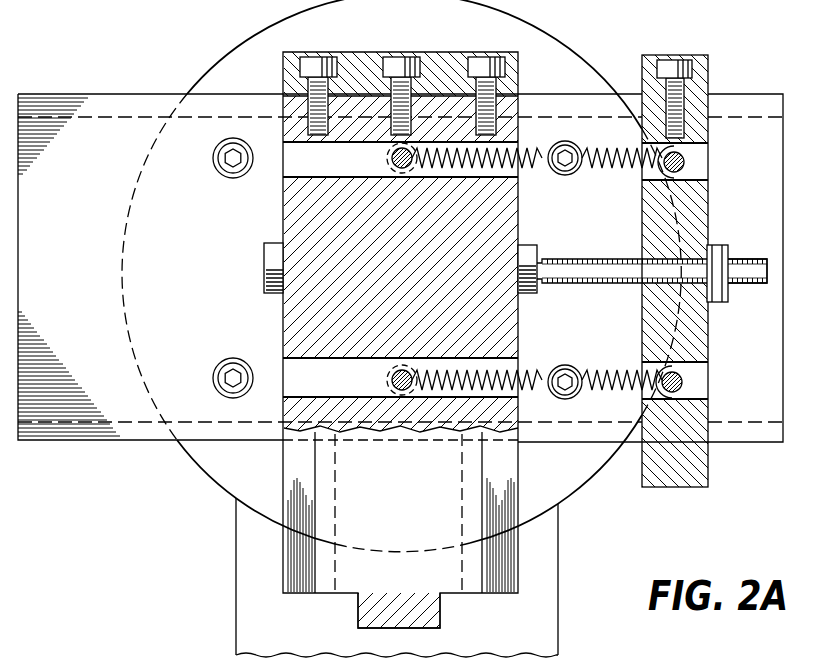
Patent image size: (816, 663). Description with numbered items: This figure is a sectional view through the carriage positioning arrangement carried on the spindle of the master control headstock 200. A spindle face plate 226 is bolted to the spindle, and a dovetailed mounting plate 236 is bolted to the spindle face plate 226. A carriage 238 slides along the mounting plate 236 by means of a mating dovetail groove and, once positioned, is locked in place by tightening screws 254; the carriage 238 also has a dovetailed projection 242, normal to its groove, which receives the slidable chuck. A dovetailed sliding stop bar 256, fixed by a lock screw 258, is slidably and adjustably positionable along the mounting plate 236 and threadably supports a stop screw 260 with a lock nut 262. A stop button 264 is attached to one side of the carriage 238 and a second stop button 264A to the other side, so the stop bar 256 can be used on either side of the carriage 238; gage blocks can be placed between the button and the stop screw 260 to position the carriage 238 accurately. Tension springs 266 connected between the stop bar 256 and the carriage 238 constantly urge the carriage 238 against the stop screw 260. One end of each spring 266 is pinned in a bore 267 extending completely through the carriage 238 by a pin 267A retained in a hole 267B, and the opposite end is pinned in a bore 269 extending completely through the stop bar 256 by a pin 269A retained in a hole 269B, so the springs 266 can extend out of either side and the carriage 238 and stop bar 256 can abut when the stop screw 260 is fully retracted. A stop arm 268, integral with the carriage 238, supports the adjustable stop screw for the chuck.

The master control headstock 200 is at (228, 538).
The spindle face plate 226 is at (240, 42).
The dovetailed mounting plate 236 is at (97, 95).
The carriage 238 is at (512, 557).
The dovetailed projection 242 is at (350, 583).
The screws 254 is at (485, 53).
The dovetailed sliding stop bar 256 is at (710, 201).
The lock screw 258 is at (673, 58).
The stop screw 260 is at (742, 257).
The lock nut 262 is at (726, 300).
The stop button 264 is at (538, 256).
The stop button 264A is at (270, 266).
The tension springs 266 is at (589, 156).
The bore 267 is at (293, 162).
The pin 267A is at (391, 158).
The hole 267B is at (398, 172).
The stop arm 268 is at (441, 624).
The bore 269 is at (697, 153).
The pin 269A is at (688, 164).
The hole 269B is at (668, 173).